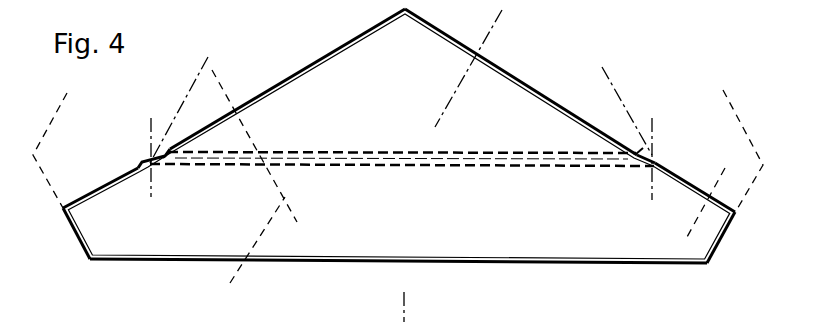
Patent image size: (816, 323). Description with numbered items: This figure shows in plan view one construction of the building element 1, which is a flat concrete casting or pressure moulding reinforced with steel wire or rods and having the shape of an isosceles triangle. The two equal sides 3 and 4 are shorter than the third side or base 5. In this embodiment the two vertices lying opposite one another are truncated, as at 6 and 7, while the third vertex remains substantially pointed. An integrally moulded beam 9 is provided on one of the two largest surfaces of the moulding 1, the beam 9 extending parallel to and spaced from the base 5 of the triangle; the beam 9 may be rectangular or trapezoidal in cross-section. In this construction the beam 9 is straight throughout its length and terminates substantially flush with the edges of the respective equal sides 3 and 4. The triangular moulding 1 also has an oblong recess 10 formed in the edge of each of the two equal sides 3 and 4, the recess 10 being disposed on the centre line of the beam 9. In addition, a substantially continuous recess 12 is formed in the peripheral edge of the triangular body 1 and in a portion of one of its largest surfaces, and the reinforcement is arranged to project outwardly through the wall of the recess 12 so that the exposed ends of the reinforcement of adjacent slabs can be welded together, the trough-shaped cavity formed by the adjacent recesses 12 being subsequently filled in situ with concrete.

The building element 1 is at (604, 245).
The equal side 3 is at (262, 82).
The equal side 4 is at (549, 90).
The base 5 is at (316, 268).
The truncated vertex 6 is at (73, 228).
The truncated vertex 7 is at (714, 252).
The beam 9 is at (540, 152).
The oblong recess 10 is at (147, 163).
The continuous recess 12 is at (716, 140).